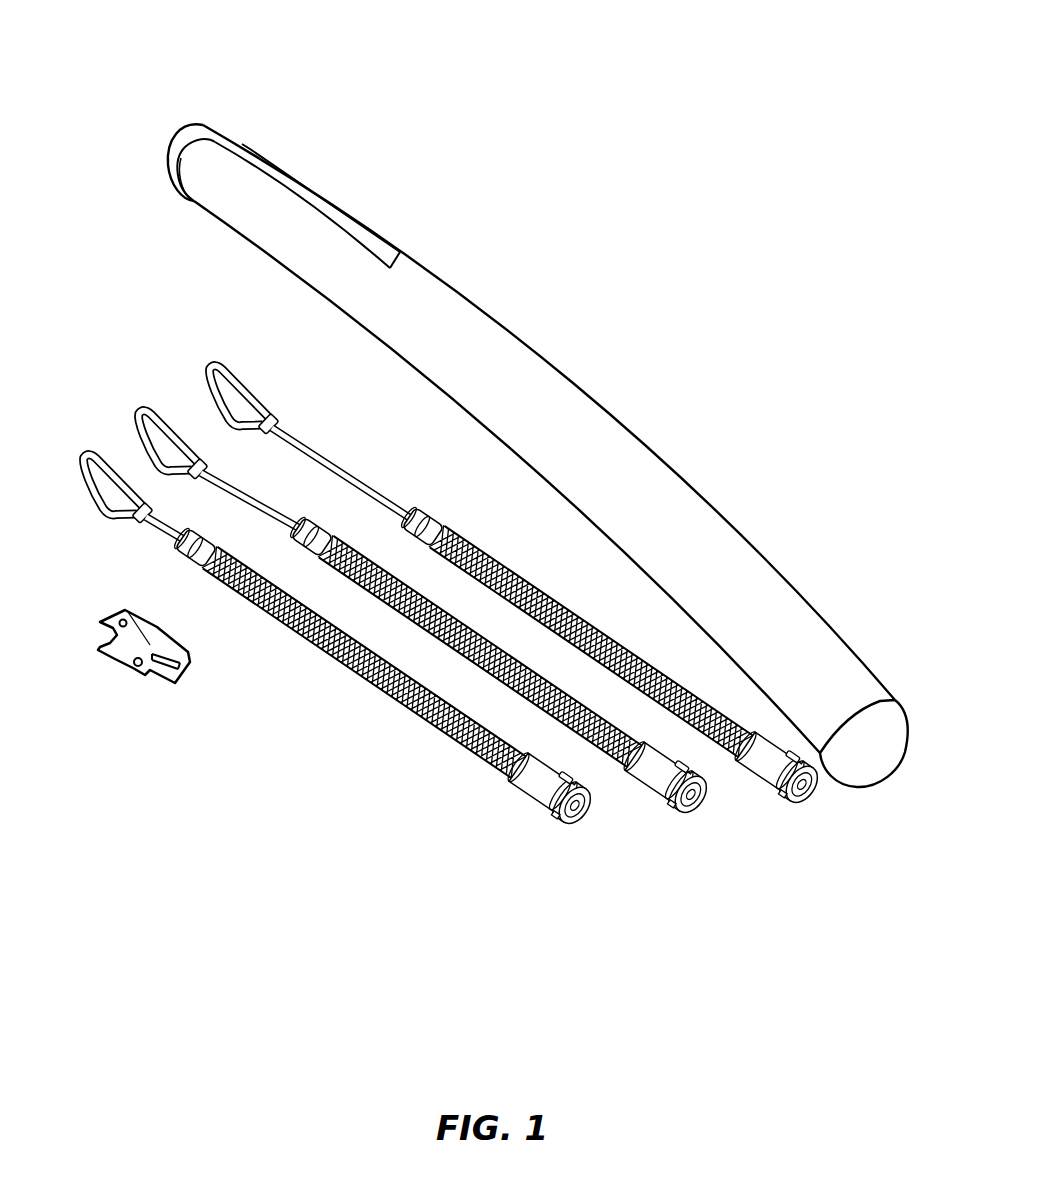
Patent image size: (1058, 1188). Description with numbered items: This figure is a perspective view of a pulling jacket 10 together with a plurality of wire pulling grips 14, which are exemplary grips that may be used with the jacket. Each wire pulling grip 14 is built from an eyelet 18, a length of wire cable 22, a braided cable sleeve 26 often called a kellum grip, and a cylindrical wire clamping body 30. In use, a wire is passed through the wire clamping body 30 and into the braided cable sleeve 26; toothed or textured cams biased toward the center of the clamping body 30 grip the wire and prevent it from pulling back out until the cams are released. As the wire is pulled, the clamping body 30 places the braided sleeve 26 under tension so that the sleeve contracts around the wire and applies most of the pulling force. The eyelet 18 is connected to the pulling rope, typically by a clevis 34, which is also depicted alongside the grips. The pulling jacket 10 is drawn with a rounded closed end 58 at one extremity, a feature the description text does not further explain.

The pulling jacket 10 is at (527, 399).
The wire pulling grips 14 is at (547, 623).
The eyelet 18 is at (218, 363).
The wire cable 22 is at (317, 445).
The braided cable sleeve 26 is at (448, 553).
The cylindrical wire clamping body 30 is at (773, 780).
The clevis 34 is at (123, 648).
The end cap 58 is at (190, 133).